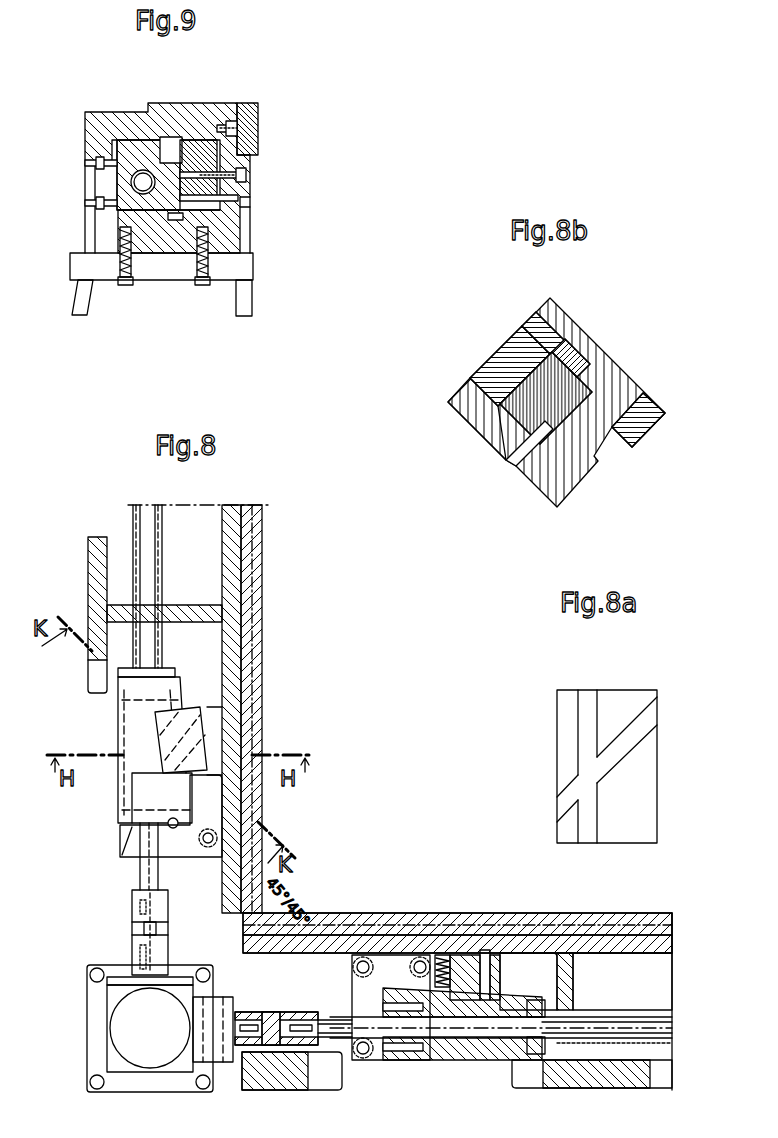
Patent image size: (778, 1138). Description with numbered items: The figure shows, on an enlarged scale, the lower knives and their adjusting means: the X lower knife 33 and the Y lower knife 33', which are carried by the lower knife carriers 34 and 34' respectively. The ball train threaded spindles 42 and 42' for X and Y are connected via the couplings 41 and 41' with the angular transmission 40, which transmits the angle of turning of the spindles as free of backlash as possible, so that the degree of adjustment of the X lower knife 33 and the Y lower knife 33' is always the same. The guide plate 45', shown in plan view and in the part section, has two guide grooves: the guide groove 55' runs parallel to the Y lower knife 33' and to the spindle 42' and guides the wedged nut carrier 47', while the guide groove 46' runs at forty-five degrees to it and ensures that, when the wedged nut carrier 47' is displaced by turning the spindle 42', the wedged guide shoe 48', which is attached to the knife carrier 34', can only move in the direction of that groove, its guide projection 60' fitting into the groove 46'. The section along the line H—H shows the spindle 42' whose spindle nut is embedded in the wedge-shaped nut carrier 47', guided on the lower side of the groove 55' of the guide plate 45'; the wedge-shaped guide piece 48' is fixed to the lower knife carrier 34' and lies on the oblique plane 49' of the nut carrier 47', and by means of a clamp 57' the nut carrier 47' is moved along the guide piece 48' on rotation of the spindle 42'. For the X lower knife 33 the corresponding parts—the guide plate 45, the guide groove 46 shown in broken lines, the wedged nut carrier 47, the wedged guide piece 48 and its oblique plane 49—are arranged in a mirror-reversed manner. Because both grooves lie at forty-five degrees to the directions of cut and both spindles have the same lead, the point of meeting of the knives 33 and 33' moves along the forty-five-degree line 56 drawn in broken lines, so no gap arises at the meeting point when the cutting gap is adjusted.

In FIG. 8, the X lower knife 33 is at (457, 905).
In FIG. 8, the X lower knife carrier 34 is at (457, 914).
In FIG. 8, the angular transmission 40 is at (122, 1010).
In FIG. 8, the coupling 41 is at (293, 1028).
In FIG. 8, the ball train threaded spindle 42 is at (501, 1001).
In FIG. 8, the guide plate 45 is at (391, 970).
In FIG. 8, the guide groove 46 is at (449, 940).
In FIG. 8, the wedged nut carrier 47 is at (462, 964).
In FIG. 8, the wedged guide piece 48 is at (475, 938).
In FIG. 8, the oblique plane 49 is at (586, 1003).
In FIG. 8, the 45° line 56 is at (243, 935).
In FIG. 9, the Y lower knife 33' is at (272, 120).
In FIG. 8B, the Y lower knife 33' is at (640, 440).
In FIG. 8, the Y lower knife 33' is at (278, 708).
In FIG. 9, the Y lower knife carrier 34' is at (193, 178).
In FIG. 8B, the Y lower knife carrier 34' is at (556, 415).
In FIG. 8, the Y lower knife carrier 34' is at (200, 709).
In FIG. 8, the coupling 41' is at (121, 932).
In FIG. 9, the ball train threaded spindle 42' is at (98, 181).
In FIG. 8, the ball train threaded spindle 42' is at (120, 695).
In FIG. 9, the guide plate 45' is at (169, 264).
In FIG. 8B, the guide plate 45' is at (468, 419).
In FIG. 8A, the guide plate 45' is at (611, 736).
In FIG. 8, the guide plate 45' is at (147, 818).
In FIG. 9, the guide groove 46' is at (189, 269).
In FIG. 8B, the guide groove 46' is at (520, 417).
In FIG. 8A, the guide groove 46' is at (607, 725).
In FIG. 8, the guide groove 46' is at (257, 741).
In FIG. 9, the wedged nut carrier 47' is at (111, 180).
In FIG. 8B, the wedged nut carrier 47' is at (497, 366).
In FIG. 8, the wedged nut carrier 47' is at (134, 752).
In FIG. 9, the wedged guide shoe 48' is at (240, 170).
In FIG. 8B, the wedged guide shoe 48' is at (524, 333).
In FIG. 8, the wedged guide shoe 48' is at (232, 732).
In FIG. 8, the oblique plane 49' is at (215, 669).
In FIG. 9, the guide groove 55' is at (125, 254).
In FIG. 8A, the guide groove 55' is at (580, 766).
In FIG. 9, the clamp 57' is at (215, 105).
In FIG. 8B, the clamp 57' is at (600, 351).
In FIG. 8B, the guide projection 60' is at (520, 463).